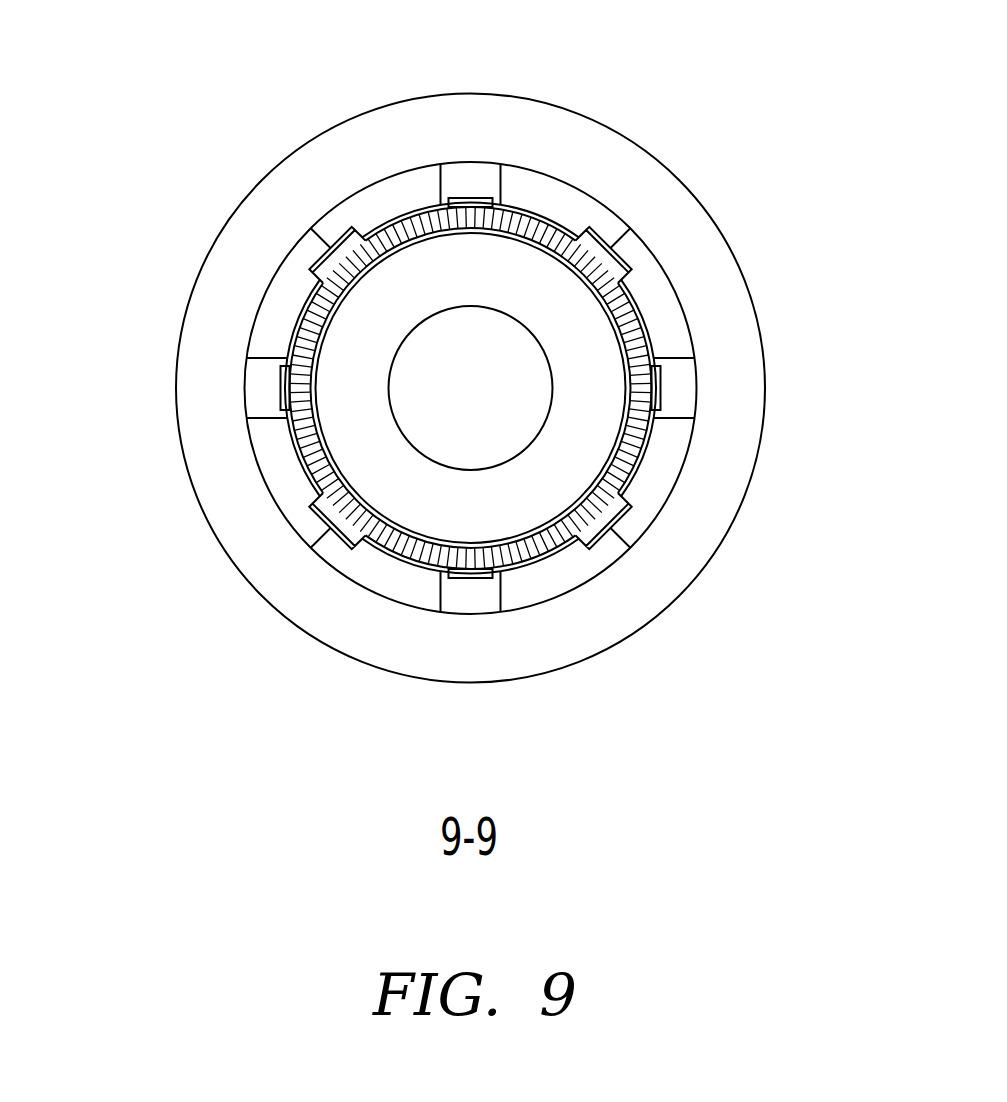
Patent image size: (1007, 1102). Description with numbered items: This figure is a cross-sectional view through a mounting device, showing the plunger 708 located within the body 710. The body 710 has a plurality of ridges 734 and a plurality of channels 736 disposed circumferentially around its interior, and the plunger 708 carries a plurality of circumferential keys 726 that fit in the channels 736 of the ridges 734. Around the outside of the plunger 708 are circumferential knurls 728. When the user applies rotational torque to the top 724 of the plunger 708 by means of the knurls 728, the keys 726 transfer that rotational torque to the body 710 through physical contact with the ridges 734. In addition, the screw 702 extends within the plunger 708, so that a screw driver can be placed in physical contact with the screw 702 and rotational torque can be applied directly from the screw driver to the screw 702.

The screw 702 is at (510, 463).
The plunger 708 is at (392, 218).
The body 710 is at (643, 145).
The top 724 is at (573, 450).
The circumferential keys 726 is at (610, 267).
The circumferential knurls 728 is at (547, 560).
The ridges 734 is at (530, 187).
The channels 736 is at (459, 180).